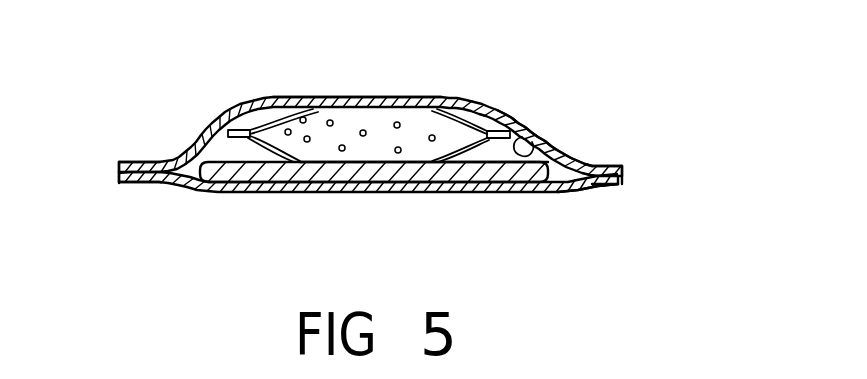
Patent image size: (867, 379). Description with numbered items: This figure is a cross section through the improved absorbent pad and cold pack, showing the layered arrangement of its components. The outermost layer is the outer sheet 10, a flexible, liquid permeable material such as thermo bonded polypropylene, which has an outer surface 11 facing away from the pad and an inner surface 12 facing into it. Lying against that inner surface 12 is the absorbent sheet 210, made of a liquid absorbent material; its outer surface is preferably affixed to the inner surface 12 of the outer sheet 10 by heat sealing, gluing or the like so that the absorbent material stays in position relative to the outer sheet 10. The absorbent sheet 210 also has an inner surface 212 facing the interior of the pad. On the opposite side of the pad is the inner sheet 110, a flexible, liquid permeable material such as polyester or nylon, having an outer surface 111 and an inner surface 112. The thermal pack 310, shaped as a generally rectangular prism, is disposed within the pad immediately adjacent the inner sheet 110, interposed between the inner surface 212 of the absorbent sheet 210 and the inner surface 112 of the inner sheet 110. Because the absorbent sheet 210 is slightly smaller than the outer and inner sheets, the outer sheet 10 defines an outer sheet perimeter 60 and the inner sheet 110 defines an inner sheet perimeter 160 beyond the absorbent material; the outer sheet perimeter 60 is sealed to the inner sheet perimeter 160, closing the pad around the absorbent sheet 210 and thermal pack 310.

The outer sheet 10 is at (415, 137).
The outer surface 11 is at (452, 193).
The inner surface 12 is at (217, 193).
The outer sheet perimeter 60 is at (607, 190).
The inner sheet 110 is at (433, 97).
The outer surface 111 is at (268, 96).
The inner surface 112 is at (550, 148).
The inner sheet perimeter 160 is at (598, 163).
The absorbent sheet 210 is at (205, 152).
The inner surface 212 is at (478, 160).
The thermal pack 310 is at (308, 123).